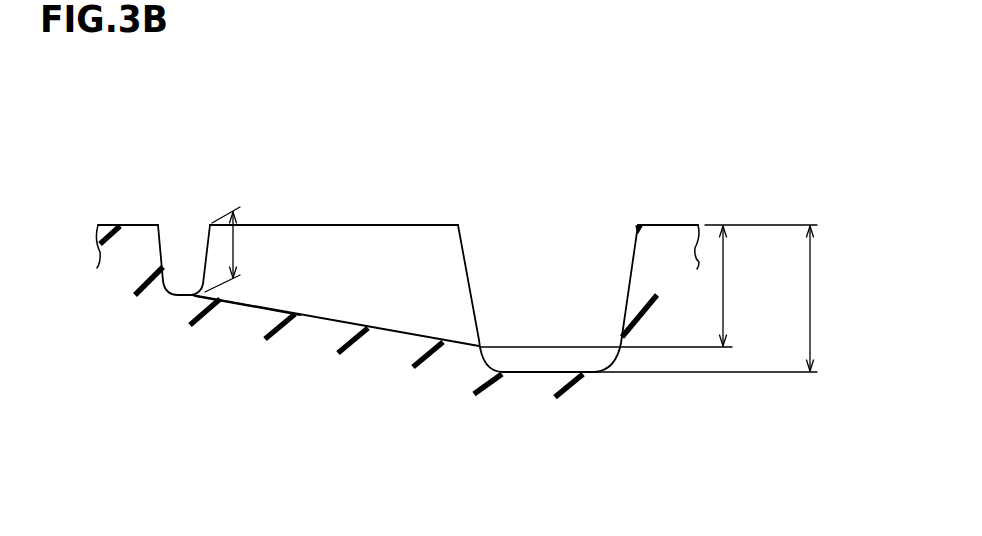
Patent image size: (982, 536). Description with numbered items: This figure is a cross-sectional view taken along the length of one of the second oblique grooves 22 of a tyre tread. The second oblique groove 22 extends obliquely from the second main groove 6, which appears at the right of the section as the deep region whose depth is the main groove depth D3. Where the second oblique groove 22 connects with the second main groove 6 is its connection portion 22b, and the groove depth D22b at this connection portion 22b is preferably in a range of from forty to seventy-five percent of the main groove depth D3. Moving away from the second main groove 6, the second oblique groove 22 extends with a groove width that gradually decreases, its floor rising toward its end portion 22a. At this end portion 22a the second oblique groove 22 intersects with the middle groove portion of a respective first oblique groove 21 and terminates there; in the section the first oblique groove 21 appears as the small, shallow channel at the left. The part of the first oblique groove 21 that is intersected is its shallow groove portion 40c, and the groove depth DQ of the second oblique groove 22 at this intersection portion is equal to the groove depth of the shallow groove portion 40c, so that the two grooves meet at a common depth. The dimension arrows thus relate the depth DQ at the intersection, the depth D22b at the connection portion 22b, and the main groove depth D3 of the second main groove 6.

The second main groove 6 is at (543, 283).
The first oblique groove 21 is at (194, 216).
The shallow groove portion 40c is at (183, 255).
The second oblique groove 22 is at (375, 267).
The end portion of the second oblique groove 22a is at (203, 298).
The connection portion of the second oblique groove 22b is at (475, 352).
The groove depth of the second oblique groove at the intersection portion DQ is at (237, 243).
The groove depth of the connection portion D22b is at (648, 286).
The main groove depth D3 is at (723, 299).